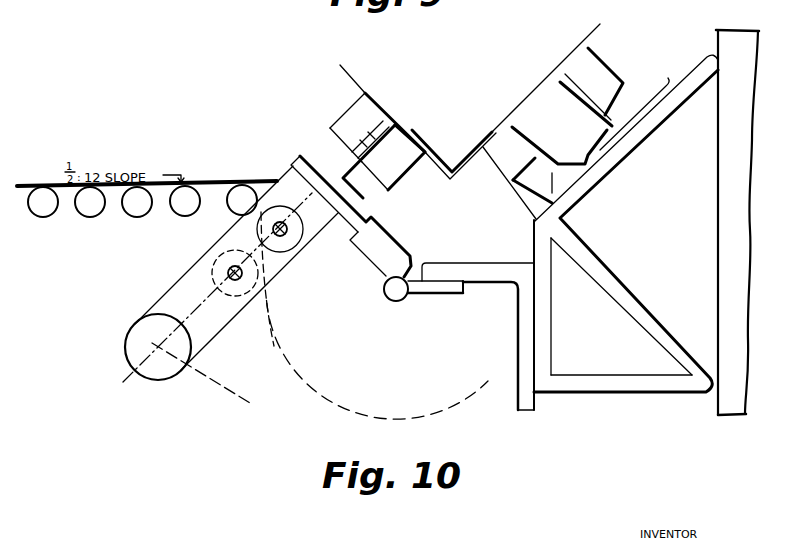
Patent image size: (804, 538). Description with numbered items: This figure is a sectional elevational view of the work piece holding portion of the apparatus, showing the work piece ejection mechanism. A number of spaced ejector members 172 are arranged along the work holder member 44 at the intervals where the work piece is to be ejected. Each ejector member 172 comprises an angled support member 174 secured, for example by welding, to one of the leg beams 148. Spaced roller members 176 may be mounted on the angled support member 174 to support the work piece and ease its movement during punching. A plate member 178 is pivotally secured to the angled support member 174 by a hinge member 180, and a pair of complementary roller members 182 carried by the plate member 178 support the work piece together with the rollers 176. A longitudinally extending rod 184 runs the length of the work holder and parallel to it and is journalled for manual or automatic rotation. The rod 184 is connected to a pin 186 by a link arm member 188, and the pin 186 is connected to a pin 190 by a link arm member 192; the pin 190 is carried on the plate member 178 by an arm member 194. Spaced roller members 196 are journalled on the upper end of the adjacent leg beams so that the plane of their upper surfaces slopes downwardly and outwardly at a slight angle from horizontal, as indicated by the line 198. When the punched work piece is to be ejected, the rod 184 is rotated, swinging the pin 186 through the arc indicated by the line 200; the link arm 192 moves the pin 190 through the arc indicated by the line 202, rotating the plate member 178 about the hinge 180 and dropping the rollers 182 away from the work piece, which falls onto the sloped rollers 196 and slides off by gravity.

The work holder member 44 is at (458, 164).
The leg beam 148 is at (727, 33).
The ejector member 172 is at (478, 280).
The angled support member 174 is at (540, 332).
The roller member 176 is at (604, 74).
The plate member 178 is at (382, 246).
The hinge member 180 is at (391, 296).
The complementary roller member 182 is at (346, 122).
The rod 184 is at (160, 371).
The pin 186 is at (228, 270).
The link arm member 188 is at (210, 326).
The pin 190 is at (284, 236).
The link arm member 192 is at (272, 264).
The arm member 194 is at (302, 190).
The roller member 196 is at (186, 200).
The line 198 is at (20, 183).
The line 200 is at (250, 402).
The line 202 is at (338, 412).